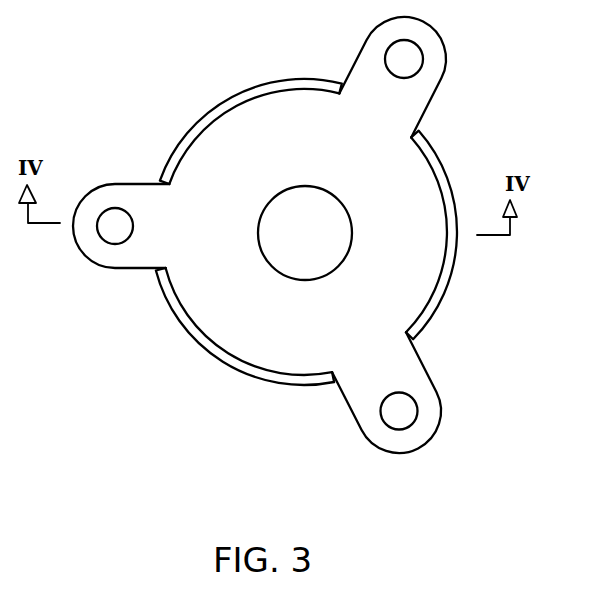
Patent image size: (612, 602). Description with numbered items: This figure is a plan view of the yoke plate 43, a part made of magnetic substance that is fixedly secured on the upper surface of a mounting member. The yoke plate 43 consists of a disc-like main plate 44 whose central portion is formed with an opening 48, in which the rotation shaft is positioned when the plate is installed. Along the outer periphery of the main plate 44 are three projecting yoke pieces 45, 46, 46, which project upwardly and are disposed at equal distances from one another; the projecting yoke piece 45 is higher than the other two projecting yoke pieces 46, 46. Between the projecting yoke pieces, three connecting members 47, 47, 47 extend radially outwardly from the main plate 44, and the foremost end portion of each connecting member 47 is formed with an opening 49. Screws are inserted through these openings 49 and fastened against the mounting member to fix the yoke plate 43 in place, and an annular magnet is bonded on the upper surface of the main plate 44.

The yoke plate 43 is at (293, 255).
The main plate 44 is at (412, 285).
The projecting yoke piece 45 is at (458, 201).
The projecting yoke pieces 46 is at (281, 79).
The connecting members 47 is at (92, 203).
The opening 48 is at (347, 250).
The openings 49 is at (110, 238).